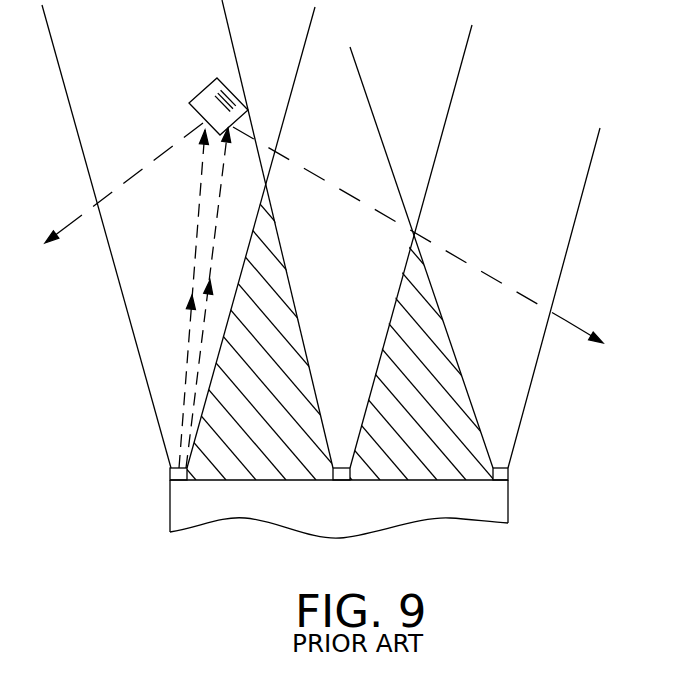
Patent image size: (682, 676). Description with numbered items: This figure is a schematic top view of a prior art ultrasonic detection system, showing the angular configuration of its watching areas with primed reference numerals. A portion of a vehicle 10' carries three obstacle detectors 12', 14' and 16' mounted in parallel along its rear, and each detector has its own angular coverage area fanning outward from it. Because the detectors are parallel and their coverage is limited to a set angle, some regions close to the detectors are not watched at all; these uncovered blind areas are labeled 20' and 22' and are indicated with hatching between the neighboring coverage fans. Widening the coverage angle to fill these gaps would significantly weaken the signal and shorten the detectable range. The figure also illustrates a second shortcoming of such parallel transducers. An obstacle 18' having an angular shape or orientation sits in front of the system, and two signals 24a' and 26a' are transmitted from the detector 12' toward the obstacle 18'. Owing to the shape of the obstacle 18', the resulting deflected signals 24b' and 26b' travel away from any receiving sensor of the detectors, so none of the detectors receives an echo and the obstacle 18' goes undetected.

The vehicle 10' is at (339, 532).
The obstacle detector 12' is at (178, 245).
The obstacle detector 14' is at (347, 284).
The obstacle detector 16' is at (475, 266).
The obstacle 18' is at (217, 83).
The uncovered area 20' is at (263, 369).
The uncovered area 22' is at (361, 369).
The transmitted signal 24a' is at (164, 299).
The deflected signal 24b' is at (124, 171).
The transmitted signal 26a' is at (271, 298).
The deflected signal 26b' is at (418, 235).